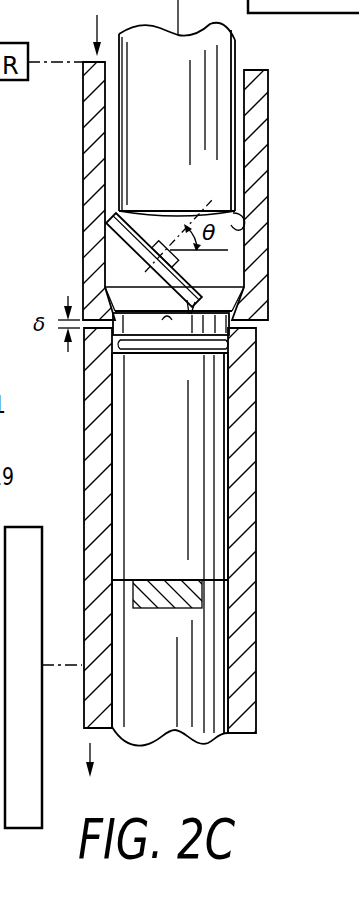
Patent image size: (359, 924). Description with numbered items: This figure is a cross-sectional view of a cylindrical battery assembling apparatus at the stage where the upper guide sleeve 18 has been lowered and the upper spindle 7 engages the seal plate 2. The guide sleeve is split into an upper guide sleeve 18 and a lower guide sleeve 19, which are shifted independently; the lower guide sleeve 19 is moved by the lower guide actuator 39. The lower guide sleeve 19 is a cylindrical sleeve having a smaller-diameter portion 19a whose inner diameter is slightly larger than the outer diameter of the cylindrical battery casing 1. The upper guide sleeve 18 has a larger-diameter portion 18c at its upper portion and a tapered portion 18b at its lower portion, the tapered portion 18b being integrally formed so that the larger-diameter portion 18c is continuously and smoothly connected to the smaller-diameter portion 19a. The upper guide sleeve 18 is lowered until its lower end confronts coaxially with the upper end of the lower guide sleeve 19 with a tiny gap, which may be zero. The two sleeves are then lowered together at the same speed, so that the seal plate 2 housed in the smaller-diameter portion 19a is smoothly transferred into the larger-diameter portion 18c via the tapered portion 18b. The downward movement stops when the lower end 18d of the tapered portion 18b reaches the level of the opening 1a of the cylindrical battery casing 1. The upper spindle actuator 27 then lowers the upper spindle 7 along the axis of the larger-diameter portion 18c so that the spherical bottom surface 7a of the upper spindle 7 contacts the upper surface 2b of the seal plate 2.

The cylindrical battery casing 1 is at (217, 422).
The opening of cylindrical battery casing 1a is at (165, 320).
The seal plate 2 is at (195, 277).
The upper surface of seal plate 2b is at (150, 215).
The upper spindle 7 is at (197, 119).
The spherical bottom surface of upper spindle 7a is at (237, 228).
The upper guide sleeve 18 is at (97, 113).
The tapered portion 18b is at (228, 297).
The larger-diameter portion 18c is at (240, 163).
The lower end of tapered portion 18d is at (245, 318).
The lower guide sleeve 19 is at (242, 476).
The smaller-diameter portion 19a is at (222, 527).
The upper spindle actuator 27 is at (315, 14).
The lower guide actuator 39 is at (38, 527).